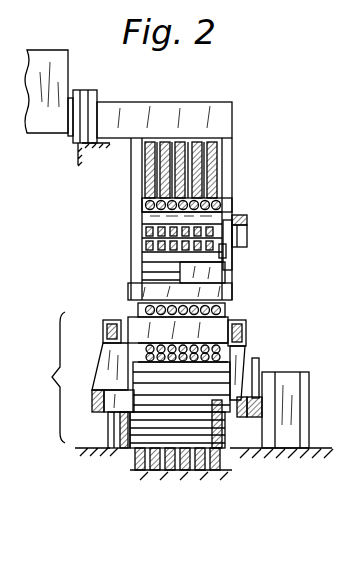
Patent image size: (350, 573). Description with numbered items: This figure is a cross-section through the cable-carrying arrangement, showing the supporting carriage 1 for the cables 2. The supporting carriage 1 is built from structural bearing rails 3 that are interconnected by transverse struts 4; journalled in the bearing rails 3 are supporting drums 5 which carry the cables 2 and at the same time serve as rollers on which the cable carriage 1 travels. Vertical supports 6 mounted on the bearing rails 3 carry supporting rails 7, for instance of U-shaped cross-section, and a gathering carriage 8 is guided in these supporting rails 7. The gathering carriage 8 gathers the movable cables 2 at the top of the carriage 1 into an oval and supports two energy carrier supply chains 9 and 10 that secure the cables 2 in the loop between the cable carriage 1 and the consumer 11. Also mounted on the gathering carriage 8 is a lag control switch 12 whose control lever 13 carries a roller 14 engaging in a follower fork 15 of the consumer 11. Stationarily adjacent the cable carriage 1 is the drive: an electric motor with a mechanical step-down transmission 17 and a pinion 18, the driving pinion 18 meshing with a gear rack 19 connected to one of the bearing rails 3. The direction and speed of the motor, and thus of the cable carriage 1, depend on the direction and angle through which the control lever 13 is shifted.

The supporting carriage 1 is at (53, 377).
The cables 2 is at (143, 470).
The bearing rails 3 is at (243, 418).
The transverse struts 4 is at (216, 452).
The supporting drums 5 is at (175, 470).
The vertical supports 6 is at (246, 358).
The supporting rails 7 is at (246, 331).
The gathering carriage 8 is at (150, 330).
The energy carrier supply chain 9 is at (162, 268).
The energy carrier supply chain 10 is at (226, 252).
The consumer 11 is at (60, 78).
The lag control switch 12 is at (222, 285).
The control lever 13 is at (233, 258).
The roller 14 is at (247, 228).
The follower fork 15 is at (236, 210).
The mechanical step-down transmission 17 is at (310, 393).
The pinion 18 is at (260, 370).
The gear rack 19 is at (255, 418).